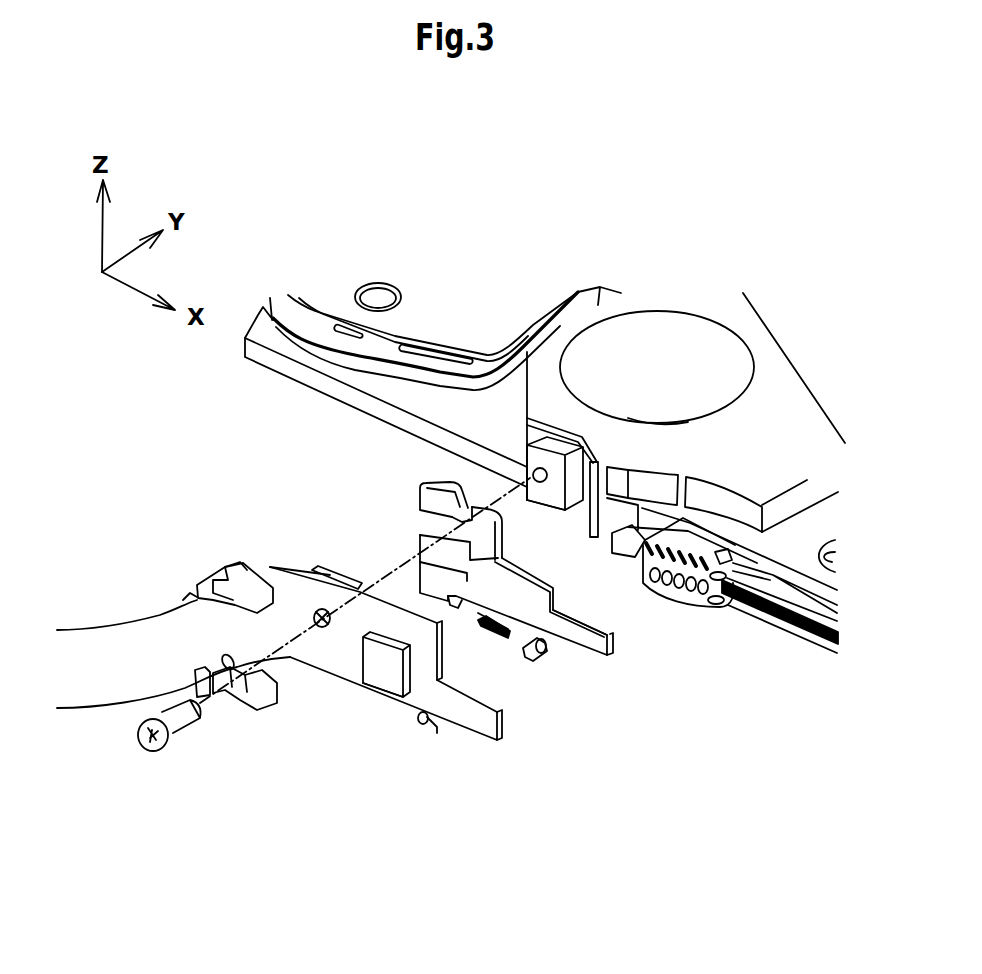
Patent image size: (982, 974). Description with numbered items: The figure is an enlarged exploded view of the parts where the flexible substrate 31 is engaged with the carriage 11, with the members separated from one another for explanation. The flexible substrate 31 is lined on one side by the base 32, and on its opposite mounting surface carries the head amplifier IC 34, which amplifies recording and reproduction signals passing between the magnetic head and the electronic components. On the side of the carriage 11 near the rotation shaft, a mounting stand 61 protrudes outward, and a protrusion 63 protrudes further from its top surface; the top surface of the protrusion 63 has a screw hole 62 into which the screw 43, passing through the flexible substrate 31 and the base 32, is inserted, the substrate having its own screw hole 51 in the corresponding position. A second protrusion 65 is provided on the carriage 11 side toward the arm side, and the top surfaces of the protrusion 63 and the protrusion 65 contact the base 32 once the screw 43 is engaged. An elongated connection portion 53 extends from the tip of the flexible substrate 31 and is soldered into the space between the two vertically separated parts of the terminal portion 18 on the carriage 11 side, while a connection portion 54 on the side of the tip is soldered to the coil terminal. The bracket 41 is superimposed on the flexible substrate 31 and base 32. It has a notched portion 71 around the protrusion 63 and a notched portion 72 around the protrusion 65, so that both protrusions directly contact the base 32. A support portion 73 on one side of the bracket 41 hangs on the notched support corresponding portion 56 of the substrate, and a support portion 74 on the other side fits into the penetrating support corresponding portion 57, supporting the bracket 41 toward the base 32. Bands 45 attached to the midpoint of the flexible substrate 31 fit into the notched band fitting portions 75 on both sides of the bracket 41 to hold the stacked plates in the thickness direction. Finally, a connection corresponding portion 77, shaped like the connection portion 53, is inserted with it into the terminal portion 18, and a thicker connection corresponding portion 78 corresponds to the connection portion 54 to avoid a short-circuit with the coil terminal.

The carriage 11 is at (778, 407).
The terminal portion 18 is at (737, 637).
The flexible substrate 31 is at (97, 650).
The base 32 is at (322, 566).
The head amplifier integrated circuit 34 is at (370, 668).
The bracket 41 is at (583, 670).
The screw 43 is at (143, 745).
The bands 45 is at (258, 566).
The screw hole 51 is at (318, 617).
The connection portion 53 is at (480, 723).
The connection portion 54 is at (370, 703).
The support corresponding portion 56 is at (358, 585).
The support corresponding portion 57 is at (420, 720).
The mounting stand 61 is at (509, 440).
The screw hole 62 is at (517, 482).
The protrusion 63 is at (539, 490).
The protrusion 65 is at (608, 478).
The notched portion 71 is at (457, 530).
The notched portion 72 is at (535, 572).
The support portion 73 is at (458, 497).
The support portion 74 is at (535, 660).
The band fitting portions 75 is at (460, 510).
The connection corresponding portion 77 is at (585, 632).
The connection corresponding portion 78 is at (493, 635).